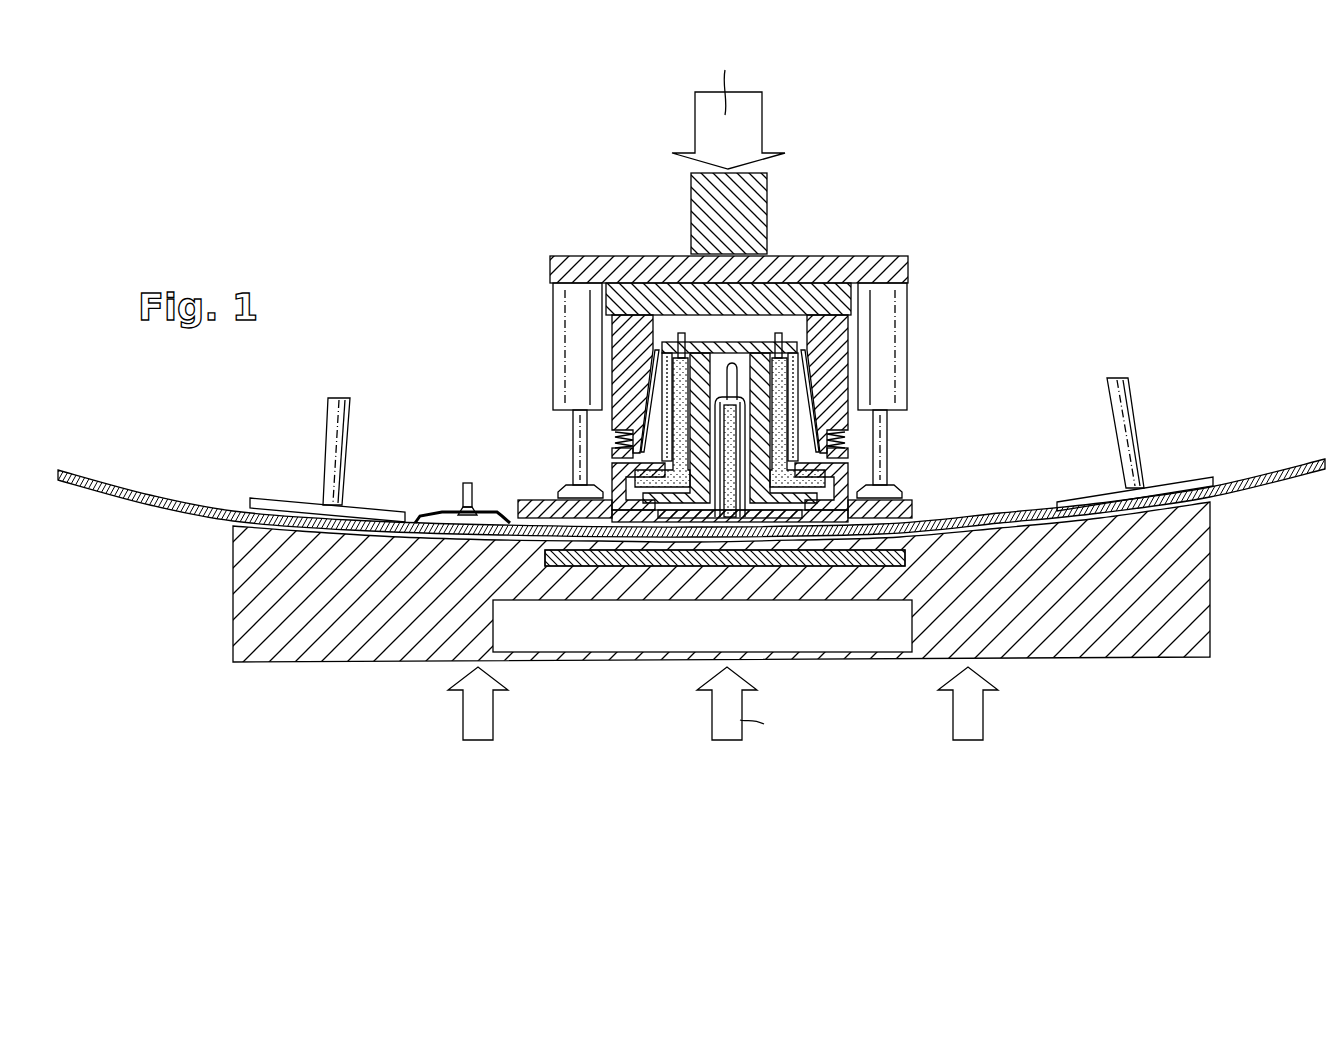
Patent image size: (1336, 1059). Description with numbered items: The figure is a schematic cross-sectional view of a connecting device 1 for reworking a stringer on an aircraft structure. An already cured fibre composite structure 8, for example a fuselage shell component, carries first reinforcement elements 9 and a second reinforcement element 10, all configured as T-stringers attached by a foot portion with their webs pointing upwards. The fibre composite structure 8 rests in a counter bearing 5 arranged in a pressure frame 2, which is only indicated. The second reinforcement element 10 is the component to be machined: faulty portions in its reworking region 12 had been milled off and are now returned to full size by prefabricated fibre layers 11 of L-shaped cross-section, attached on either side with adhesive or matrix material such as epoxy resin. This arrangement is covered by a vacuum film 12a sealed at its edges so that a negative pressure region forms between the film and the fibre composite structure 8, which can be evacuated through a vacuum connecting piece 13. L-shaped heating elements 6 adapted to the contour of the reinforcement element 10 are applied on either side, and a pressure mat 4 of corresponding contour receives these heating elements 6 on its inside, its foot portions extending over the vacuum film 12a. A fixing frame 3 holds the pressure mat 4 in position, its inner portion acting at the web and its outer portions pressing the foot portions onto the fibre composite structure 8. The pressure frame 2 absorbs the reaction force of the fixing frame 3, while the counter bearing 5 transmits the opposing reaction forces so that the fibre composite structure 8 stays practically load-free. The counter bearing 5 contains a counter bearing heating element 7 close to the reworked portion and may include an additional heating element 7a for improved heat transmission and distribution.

The connecting device 1 is at (518, 156).
The pressure frame 2 is at (742, 218).
The fixing frame 3 is at (450, 268).
The pressure mat 4 is at (722, 345).
The counter bearing 5 is at (352, 620).
The heating elements 6 is at (848, 438).
The counter bearing heating element 7 is at (822, 567).
The additional heating element 7a is at (608, 632).
The fibre composite structure 8 is at (115, 500).
The first reinforcement elements 9 is at (332, 445).
The second reinforcement element 10 is at (655, 425).
The fibre layers 11 is at (617, 438).
The reworking region 12 is at (620, 488).
The vacuum film 12a is at (498, 518).
The vacuum connecting piece 13 is at (449, 494).